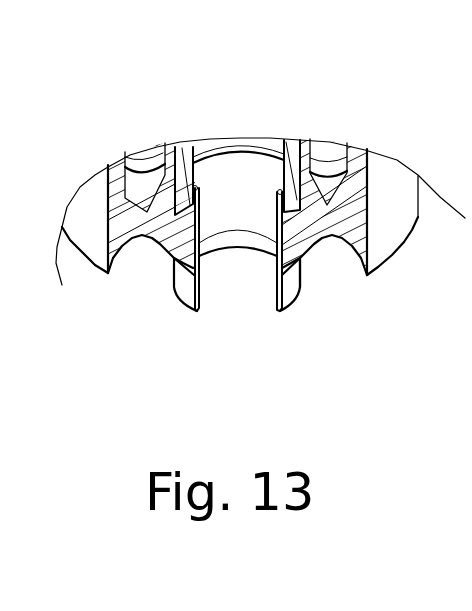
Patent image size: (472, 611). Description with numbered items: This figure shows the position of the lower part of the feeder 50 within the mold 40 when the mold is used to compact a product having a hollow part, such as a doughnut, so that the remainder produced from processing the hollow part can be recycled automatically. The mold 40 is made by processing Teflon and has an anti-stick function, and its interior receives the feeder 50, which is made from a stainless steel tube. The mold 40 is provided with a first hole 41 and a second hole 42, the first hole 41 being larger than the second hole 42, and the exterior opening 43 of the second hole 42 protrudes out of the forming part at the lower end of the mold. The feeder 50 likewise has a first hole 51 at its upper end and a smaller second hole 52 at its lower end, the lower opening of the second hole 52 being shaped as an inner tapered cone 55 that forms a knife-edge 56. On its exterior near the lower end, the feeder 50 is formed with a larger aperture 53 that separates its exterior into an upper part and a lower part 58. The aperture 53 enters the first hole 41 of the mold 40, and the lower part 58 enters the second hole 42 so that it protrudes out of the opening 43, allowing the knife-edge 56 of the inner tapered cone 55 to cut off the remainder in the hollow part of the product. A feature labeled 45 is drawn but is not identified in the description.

The mold 40 is at (95, 223).
The first hole 41 is at (294, 150).
The second hole 42 is at (303, 262).
The exterior opening 43 is at (300, 290).
The left recess 45 is at (147, 163).
The feeder 50 is at (167, 315).
The first hole 51 is at (257, 143).
The second hole 52 is at (222, 215).
The aperture 53 is at (179, 150).
The inner tapered cone 55 is at (273, 294).
The knife-edge 56 is at (287, 300).
The lower part 58 is at (183, 290).